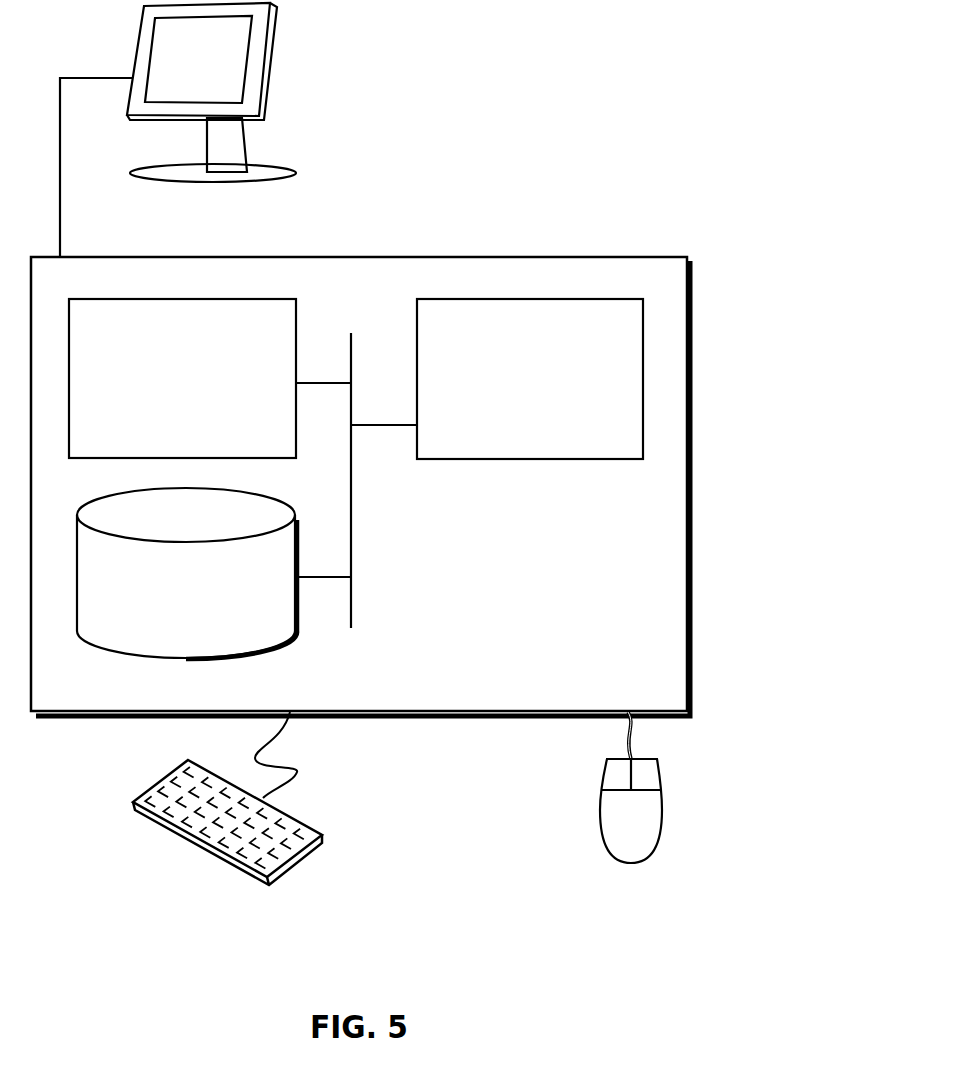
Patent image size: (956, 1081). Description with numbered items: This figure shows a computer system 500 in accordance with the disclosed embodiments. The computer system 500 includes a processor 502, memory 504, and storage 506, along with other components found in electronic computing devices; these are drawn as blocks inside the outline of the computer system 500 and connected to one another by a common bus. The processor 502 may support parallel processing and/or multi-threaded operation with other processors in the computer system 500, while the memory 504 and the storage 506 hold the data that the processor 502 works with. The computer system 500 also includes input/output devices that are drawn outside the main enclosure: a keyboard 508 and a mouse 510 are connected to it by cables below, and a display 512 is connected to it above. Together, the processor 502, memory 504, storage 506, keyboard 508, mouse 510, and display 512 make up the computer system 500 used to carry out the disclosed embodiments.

The computer system 500 is at (405, 235).
The processor 502 is at (553, 389).
The memory 504 is at (203, 389).
The storage 506 is at (209, 601).
The keyboard 508 is at (150, 822).
The mouse 510 is at (651, 832).
The display 512 is at (178, 130).